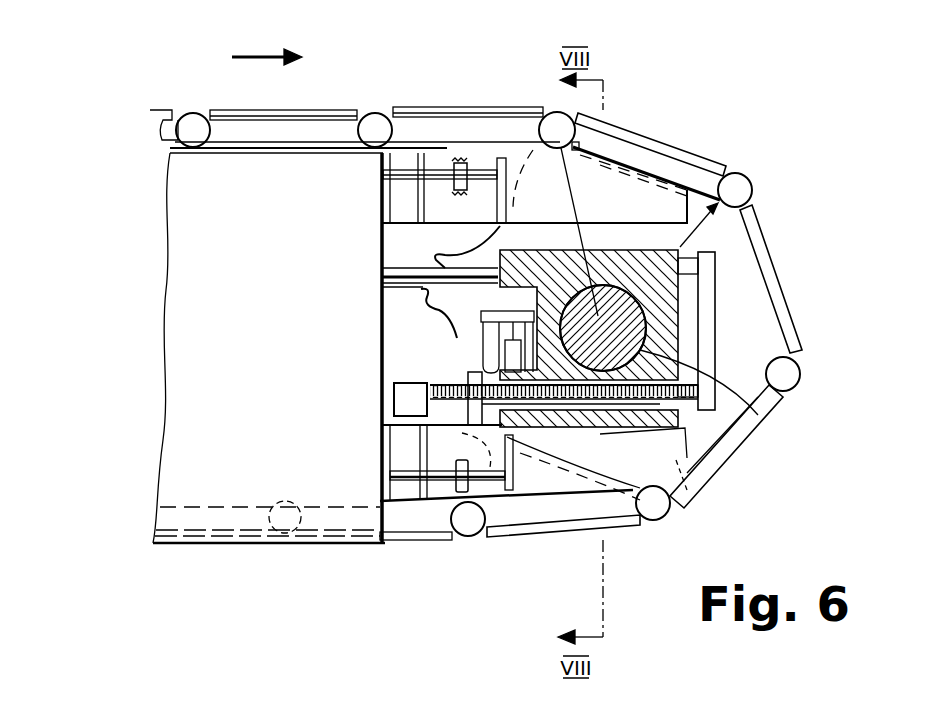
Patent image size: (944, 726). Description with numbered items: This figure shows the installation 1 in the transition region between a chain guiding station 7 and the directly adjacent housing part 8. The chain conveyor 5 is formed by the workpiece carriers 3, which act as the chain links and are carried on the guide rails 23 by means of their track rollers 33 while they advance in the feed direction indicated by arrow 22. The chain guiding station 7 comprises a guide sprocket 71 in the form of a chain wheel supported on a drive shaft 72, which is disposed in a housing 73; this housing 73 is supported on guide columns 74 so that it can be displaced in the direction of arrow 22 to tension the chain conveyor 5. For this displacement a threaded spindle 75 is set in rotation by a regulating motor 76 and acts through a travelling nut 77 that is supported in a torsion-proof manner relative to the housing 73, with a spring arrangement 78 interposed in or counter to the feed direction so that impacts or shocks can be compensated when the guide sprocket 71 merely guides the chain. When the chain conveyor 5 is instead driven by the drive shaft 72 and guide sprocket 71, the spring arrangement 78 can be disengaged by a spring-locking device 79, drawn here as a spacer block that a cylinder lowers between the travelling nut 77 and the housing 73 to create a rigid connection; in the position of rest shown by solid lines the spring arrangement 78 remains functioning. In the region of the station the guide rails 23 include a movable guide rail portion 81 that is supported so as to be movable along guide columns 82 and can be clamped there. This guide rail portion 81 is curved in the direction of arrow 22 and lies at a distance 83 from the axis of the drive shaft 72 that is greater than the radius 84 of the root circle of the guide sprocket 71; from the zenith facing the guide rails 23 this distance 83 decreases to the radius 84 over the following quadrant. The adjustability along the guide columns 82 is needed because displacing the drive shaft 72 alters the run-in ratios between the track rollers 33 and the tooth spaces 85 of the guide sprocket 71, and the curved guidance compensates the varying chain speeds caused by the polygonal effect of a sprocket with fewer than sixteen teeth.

The installation 1 is at (148, 78).
The workpiece carriers 3 is at (423, 127).
The chain conveyor 5 is at (220, 104).
The chain guiding station 7 is at (716, 98).
The housing part 8 is at (233, 457).
The feed direction arrow 22 is at (252, 52).
The guide rails 23 is at (398, 148).
The track rollers 33 is at (738, 187).
The guide sprocket 71 is at (732, 344).
The drive shaft 72 is at (760, 418).
The housing 73 is at (658, 300).
The guide columns 74 is at (413, 273).
The threaded spindle 75 is at (420, 418).
The regulating motor 76 is at (400, 404).
The travelling nut 77 is at (441, 402).
The spring arrangement 78 is at (548, 477).
The spring-locking device 79 is at (455, 336).
The movable guide rail portion 81 is at (555, 483).
The guide columns 82 is at (510, 472).
The distance 83 is at (617, 200).
The radius 84 is at (735, 240).
The tooth spaces 85 is at (421, 289).